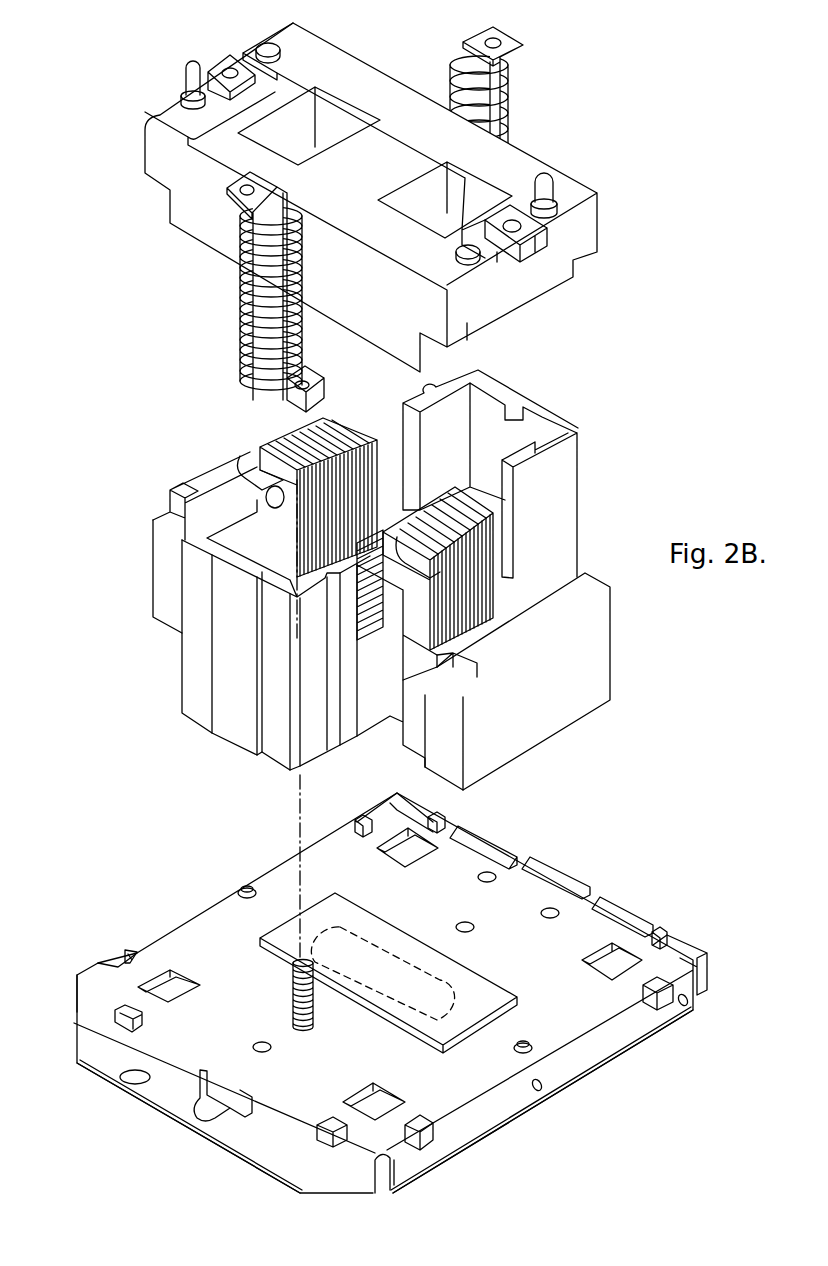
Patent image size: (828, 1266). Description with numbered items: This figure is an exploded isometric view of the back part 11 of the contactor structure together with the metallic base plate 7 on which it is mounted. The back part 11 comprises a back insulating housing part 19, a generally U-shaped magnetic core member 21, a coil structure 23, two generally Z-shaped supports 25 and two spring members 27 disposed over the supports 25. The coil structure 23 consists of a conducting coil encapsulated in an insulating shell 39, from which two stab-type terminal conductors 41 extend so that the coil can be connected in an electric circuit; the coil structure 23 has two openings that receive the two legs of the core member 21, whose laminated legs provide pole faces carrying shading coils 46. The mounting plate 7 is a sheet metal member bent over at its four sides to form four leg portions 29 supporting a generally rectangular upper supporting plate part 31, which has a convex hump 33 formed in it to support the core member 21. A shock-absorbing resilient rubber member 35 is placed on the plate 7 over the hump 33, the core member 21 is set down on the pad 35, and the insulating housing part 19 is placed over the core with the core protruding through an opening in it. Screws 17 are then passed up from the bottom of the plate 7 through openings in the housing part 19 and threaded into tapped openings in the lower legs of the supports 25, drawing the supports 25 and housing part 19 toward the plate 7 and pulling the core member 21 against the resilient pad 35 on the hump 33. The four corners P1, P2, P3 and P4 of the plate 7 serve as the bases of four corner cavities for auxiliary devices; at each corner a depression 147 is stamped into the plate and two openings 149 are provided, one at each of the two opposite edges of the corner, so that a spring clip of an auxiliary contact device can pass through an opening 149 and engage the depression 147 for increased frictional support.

The base plate 7 is at (395, 982).
The back part 11 is at (374, 665).
The screws 17 is at (293, 992).
The back insulating housing part 19 is at (160, 582).
The magnetic core member 21 is at (380, 522).
The coil structure 23 is at (185, 205).
The Z-shaped supports 25 is at (475, 50).
The spring members 27 is at (508, 93).
The leg portions 29 is at (85, 1010).
The upper supporting plate part 31 is at (527, 883).
The hump 33 is at (400, 962).
The shock-absorbing resilient member 35 is at (497, 997).
The insulating shell 39 is at (157, 152).
The stab-type terminal conductors 41 is at (190, 72).
The shading coils 46 is at (253, 462).
The depression 147 is at (170, 983).
The openings 149 is at (362, 820).
The corner P1 is at (388, 1140).
The corner P2 is at (93, 977).
The corner P3 is at (680, 965).
The corner P4 is at (395, 795).